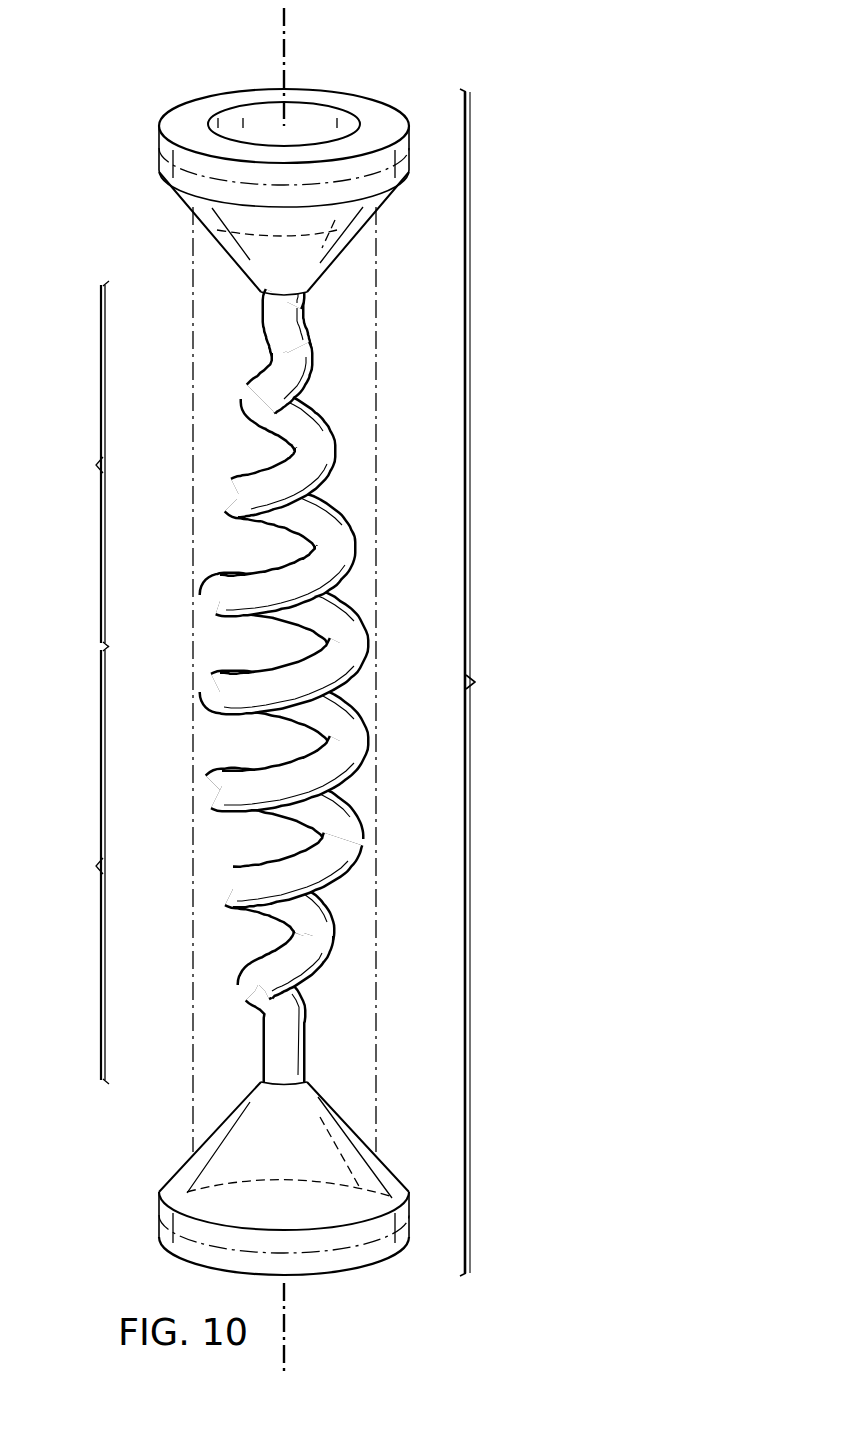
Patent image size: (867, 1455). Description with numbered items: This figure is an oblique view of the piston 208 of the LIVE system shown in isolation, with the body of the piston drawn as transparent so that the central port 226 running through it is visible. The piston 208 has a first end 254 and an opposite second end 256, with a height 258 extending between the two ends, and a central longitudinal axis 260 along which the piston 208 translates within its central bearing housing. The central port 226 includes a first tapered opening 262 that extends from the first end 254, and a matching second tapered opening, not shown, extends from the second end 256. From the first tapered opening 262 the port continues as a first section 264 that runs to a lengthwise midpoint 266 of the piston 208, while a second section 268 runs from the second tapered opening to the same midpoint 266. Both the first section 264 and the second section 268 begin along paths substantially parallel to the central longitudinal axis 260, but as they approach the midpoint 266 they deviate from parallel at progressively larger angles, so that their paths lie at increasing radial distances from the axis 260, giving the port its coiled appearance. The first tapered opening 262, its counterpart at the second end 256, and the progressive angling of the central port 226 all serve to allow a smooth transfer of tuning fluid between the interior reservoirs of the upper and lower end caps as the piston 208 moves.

The piston 208 is at (144, 75).
The central port 226 is at (243, 682).
The first end 254 is at (284, 164).
The second end 256 is at (330, 1280).
The height 258 is at (491, 682).
The central longitudinal axis 260 is at (292, 24).
The first tapered opening 262 is at (262, 122).
The first section 264 is at (78, 464).
The lengthwise midpoint 266 is at (305, 645).
The second section 268 is at (78, 865).